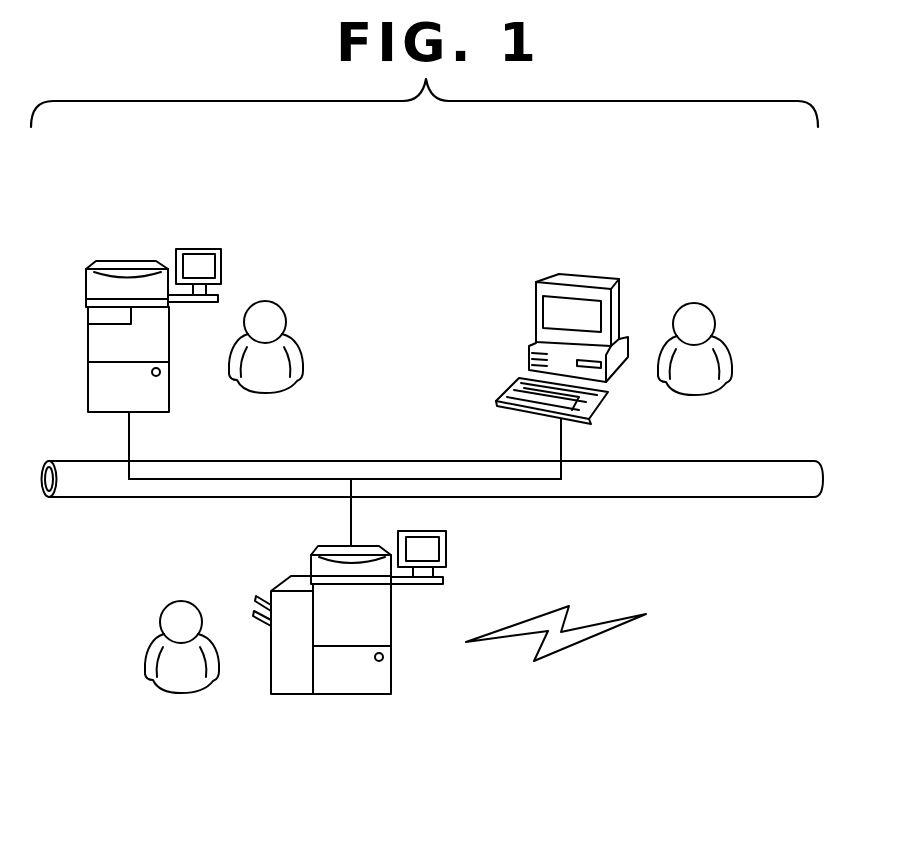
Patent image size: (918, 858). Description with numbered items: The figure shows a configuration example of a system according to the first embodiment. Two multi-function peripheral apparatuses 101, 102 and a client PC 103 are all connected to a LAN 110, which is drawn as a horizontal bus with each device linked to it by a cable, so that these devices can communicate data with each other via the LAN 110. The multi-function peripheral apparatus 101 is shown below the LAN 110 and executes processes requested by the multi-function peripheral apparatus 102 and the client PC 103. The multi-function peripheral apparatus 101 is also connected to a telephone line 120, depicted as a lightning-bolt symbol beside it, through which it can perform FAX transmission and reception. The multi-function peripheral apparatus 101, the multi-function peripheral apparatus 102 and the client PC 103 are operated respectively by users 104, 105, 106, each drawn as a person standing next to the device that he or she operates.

The multi-function peripheral apparatus 101 is at (338, 697).
The multi-function peripheral apparatus 102 is at (110, 262).
The client PC 103 is at (588, 275).
The user 104 is at (181, 697).
The user 105 is at (262, 305).
The user 106 is at (690, 305).
The LAN 110 is at (773, 463).
The telephone line 120 is at (557, 652).